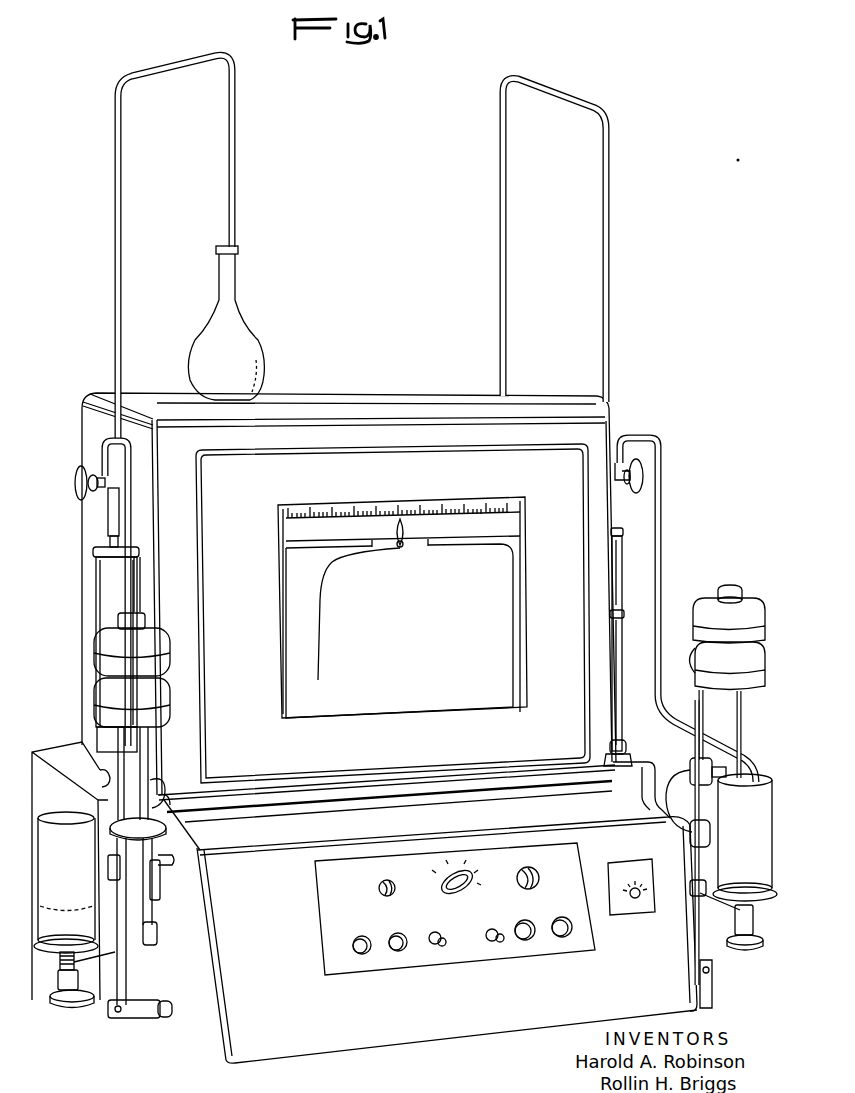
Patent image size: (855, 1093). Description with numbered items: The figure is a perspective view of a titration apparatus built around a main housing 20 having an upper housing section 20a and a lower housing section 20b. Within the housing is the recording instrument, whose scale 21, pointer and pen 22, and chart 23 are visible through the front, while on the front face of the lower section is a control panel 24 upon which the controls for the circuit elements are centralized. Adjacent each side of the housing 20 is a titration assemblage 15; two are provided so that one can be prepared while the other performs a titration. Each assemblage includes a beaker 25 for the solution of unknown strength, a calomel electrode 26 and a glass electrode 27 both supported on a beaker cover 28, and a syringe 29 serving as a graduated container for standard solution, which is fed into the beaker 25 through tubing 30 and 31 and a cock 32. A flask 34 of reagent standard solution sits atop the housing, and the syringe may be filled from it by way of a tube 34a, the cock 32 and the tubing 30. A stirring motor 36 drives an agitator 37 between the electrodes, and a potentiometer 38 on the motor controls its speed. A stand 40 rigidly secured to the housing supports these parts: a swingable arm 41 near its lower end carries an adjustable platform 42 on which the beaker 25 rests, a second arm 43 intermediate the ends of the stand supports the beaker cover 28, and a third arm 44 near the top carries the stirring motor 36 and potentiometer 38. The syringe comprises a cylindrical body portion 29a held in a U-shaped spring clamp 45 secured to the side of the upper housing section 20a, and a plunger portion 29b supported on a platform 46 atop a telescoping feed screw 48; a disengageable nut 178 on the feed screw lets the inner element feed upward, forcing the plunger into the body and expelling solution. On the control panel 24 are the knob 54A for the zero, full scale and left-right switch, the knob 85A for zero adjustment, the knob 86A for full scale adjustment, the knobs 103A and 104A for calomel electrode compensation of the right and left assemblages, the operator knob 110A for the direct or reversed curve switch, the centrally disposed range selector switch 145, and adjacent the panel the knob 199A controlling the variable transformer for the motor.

The titration assemblage 15 is at (41, 990).
The main housing 20 is at (416, 391).
The upper housing section 20a is at (377, 397).
The lower housing section 20b is at (340, 1033).
The scale 21 is at (442, 501).
The pointer and pen 22 is at (404, 548).
The chart 23 is at (500, 627).
The control panel 24 is at (475, 955).
The beaker 25 is at (45, 877).
The calomel electrode 26 is at (130, 910).
The glass electrode 27 is at (153, 890).
The beaker cover 28 is at (172, 806).
The syringe 29 is at (92, 575).
The cylindrical body portion 29a is at (104, 598).
The plunger portion 29b is at (104, 733).
The tubing 30 is at (110, 524).
The tubing 31 is at (130, 516).
The cock 32 is at (76, 482).
The flask 34 is at (258, 342).
The tube 34a is at (122, 312).
The stirring motor 36 is at (168, 692).
The agitator 37 is at (158, 934).
The potentiometer 38 is at (160, 640).
The stand 40 is at (112, 1016).
The swingable arm 41 is at (58, 976).
The adjustable platform 42 is at (58, 962).
The second arm 43 is at (690, 768).
The third arm 44 is at (688, 657).
The U-shaped spring clamp 45 is at (141, 583).
The platform 46 is at (92, 772).
The feed screw 48 is at (101, 778).
The knob 54A is at (388, 896).
The knob 85A is at (565, 915).
The knob 86A is at (525, 920).
The knob 103A is at (405, 951).
The knob 104A is at (360, 954).
The operator knob 110A is at (539, 883).
The range selector switch 145 is at (452, 893).
The disengageable nut 178 is at (620, 742).
The knob 199A is at (637, 898).